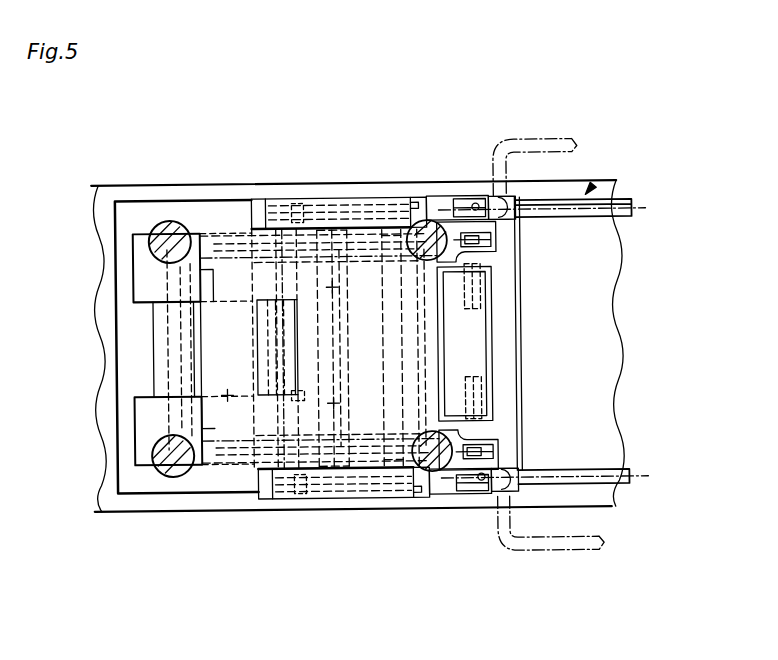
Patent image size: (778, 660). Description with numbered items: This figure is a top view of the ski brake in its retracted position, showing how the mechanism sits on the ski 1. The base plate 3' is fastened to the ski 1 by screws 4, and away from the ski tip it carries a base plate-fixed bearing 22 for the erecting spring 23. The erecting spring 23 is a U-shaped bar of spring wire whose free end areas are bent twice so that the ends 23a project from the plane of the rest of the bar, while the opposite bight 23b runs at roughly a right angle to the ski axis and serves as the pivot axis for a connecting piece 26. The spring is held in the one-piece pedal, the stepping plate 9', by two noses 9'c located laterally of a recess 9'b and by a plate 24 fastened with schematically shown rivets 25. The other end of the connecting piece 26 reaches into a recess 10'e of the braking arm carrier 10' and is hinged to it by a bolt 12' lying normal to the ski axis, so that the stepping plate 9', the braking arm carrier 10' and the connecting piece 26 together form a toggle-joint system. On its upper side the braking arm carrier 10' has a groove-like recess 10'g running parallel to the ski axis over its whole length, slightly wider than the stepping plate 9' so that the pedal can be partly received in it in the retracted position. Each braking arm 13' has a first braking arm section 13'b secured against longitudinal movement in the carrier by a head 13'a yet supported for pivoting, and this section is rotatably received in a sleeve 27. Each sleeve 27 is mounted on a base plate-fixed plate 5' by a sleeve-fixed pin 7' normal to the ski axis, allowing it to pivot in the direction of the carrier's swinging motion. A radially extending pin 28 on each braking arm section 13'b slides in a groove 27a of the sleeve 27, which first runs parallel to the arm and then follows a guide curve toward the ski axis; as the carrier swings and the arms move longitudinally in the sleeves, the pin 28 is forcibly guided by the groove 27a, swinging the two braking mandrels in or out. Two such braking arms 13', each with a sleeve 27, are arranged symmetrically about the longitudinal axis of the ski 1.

The ski 1 is at (107, 190).
The base plate 3' is at (186, 299).
The screws 4 is at (167, 229).
The bight 23b is at (180, 301).
The noses 9'c is at (214, 278).
The plate 24 is at (234, 241).
The bolt 12' is at (330, 167).
The head 13'a is at (319, 255).
The braking arm section 13'b is at (349, 353).
The rivets 25 is at (336, 270).
The groove-like recess 10'g is at (414, 286).
The sleeve 27 is at (430, 201).
The groove 27a is at (470, 204).
The pin 28 is at (482, 206).
The braking arm 13' is at (567, 329).
The pin 7' is at (558, 341).
The plate 5' is at (543, 344).
The ends 23a is at (484, 284).
The bearing 22 is at (485, 344).
The recess 9'b is at (172, 411).
The connecting piece 26 is at (226, 391).
The erecting spring 23 is at (296, 399).
The recess 10'e is at (322, 429).
The braking arm carrier 10' is at (336, 534).
The stepping plate 9' is at (423, 414).